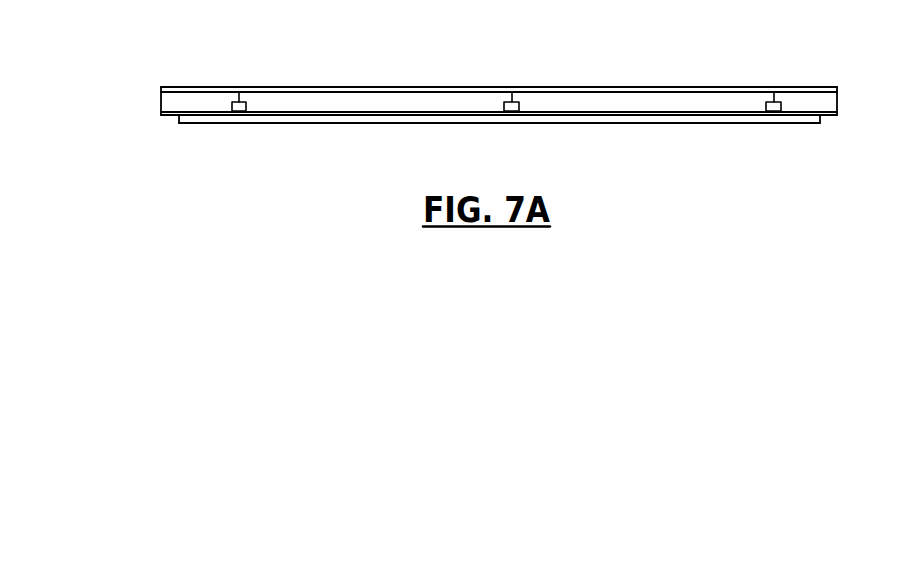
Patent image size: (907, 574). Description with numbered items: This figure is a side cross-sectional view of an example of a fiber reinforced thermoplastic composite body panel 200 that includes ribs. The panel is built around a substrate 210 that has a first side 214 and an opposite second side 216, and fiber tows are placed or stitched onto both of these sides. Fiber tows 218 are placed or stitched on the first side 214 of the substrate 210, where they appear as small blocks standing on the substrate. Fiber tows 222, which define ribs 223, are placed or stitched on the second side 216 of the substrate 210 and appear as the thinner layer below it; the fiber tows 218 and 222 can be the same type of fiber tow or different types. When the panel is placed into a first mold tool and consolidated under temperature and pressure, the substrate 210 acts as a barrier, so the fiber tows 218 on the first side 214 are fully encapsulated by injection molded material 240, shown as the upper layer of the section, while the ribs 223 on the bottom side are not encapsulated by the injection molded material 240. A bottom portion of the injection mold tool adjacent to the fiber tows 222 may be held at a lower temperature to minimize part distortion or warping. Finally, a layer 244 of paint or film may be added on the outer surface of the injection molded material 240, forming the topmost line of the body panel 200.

The fiber reinforced thermoplastic composite body panel 200 is at (362, 41).
The substrate 210 is at (335, 110).
The first side 214 is at (583, 112).
The second side 216 is at (168, 116).
The fiber tows 218 is at (240, 102).
The fiber tows 222 is at (391, 124).
The ribs 223 is at (567, 124).
The injection molded material 240 is at (819, 92).
The layer of paint or film 244 is at (795, 87).